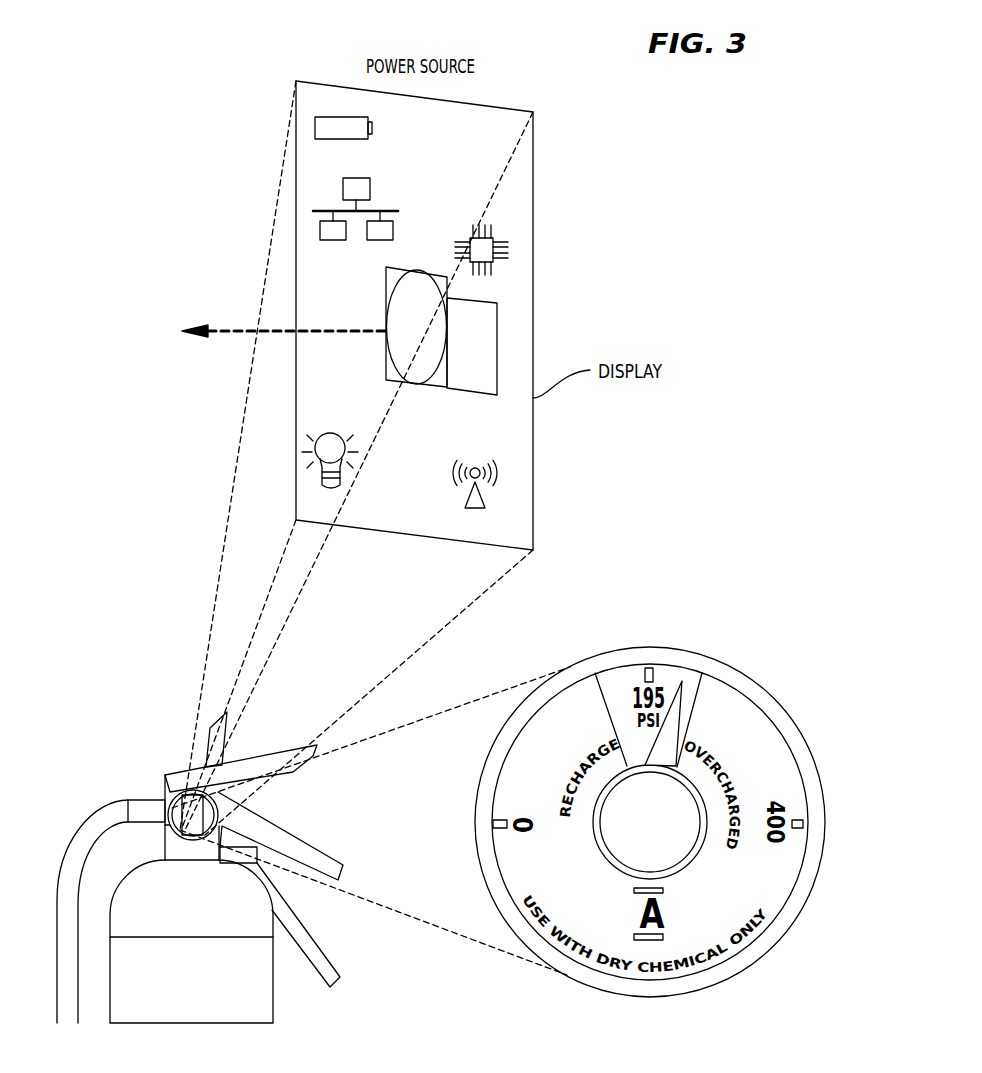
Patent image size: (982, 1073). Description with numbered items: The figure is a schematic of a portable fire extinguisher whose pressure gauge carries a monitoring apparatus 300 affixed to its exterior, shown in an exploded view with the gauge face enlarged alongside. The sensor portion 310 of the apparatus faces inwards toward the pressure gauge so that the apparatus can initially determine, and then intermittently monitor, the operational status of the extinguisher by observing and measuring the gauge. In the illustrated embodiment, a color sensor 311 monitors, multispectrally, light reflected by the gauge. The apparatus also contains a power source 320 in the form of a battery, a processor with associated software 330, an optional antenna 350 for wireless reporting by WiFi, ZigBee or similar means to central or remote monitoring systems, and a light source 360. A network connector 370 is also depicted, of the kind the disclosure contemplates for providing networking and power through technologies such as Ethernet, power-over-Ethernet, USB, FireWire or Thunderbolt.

The monitoring apparatus 300 is at (170, 798).
The sensor portion 310 is at (218, 353).
The color sensor 311 is at (473, 393).
The power source 320 is at (350, 139).
The processor 330 is at (508, 245).
The antenna 350 is at (464, 501).
The light source 360 is at (338, 482).
The network interface 370 is at (370, 193).